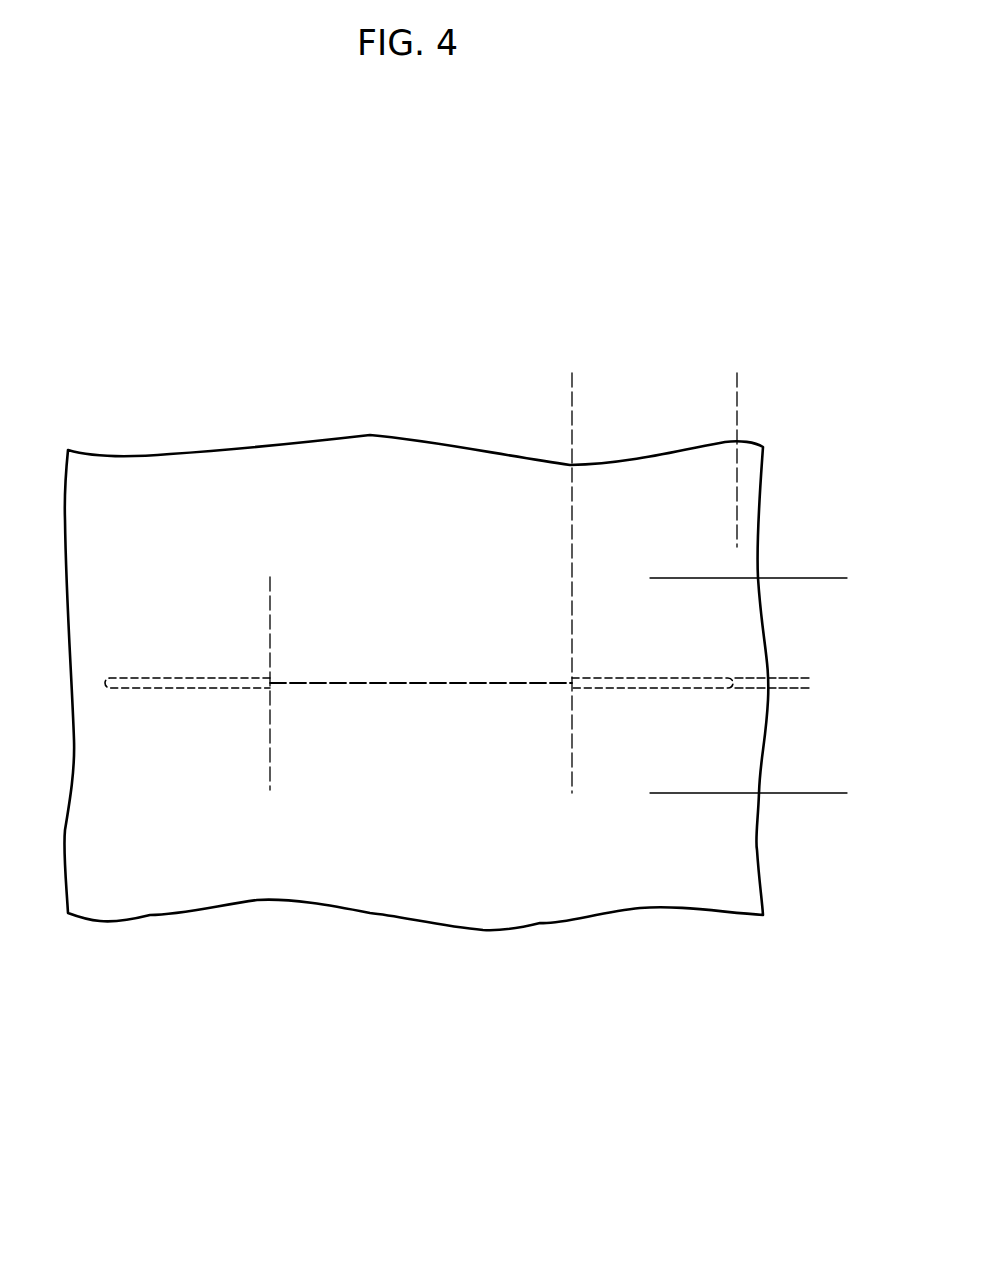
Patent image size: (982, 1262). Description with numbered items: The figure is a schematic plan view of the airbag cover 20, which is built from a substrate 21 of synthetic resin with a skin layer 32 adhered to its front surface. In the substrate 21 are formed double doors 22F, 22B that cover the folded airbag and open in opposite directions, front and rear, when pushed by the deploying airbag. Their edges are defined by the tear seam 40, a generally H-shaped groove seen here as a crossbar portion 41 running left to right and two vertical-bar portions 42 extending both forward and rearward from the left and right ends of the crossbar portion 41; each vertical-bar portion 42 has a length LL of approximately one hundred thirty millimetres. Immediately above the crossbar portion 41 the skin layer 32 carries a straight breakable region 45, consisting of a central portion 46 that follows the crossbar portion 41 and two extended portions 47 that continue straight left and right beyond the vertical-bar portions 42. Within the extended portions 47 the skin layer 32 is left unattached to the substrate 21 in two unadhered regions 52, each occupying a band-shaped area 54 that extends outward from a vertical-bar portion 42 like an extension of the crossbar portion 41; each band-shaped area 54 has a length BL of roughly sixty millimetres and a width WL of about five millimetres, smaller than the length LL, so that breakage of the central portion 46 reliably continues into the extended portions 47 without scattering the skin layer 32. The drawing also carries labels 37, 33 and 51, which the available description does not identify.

The airbag cover 20 is at (423, 477).
The substrate 21 is at (95, 420).
The skin-side layer 37 is at (107, 513).
The skin layer 32 is at (208, 419).
The core wrap 33 is at (175, 512).
The front door 22F is at (360, 623).
The back door 22B is at (483, 737).
The side region 51 is at (488, 525).
The tear seam 40 is at (419, 837).
The crossbar portion 41 is at (405, 695).
The vertical-bar portions 42 is at (275, 782).
The breakable region 45 is at (353, 684).
The central portion 46 is at (347, 673).
The extended portions 47 is at (150, 688).
The band-shaped area 54 is at (447, 830).
The unadhered regions 52 is at (230, 688).
The length of band-shaped area BL is at (737, 385).
The width of band-shaped area WL is at (800, 727).
The length of vertical-bar portion LL is at (838, 578).